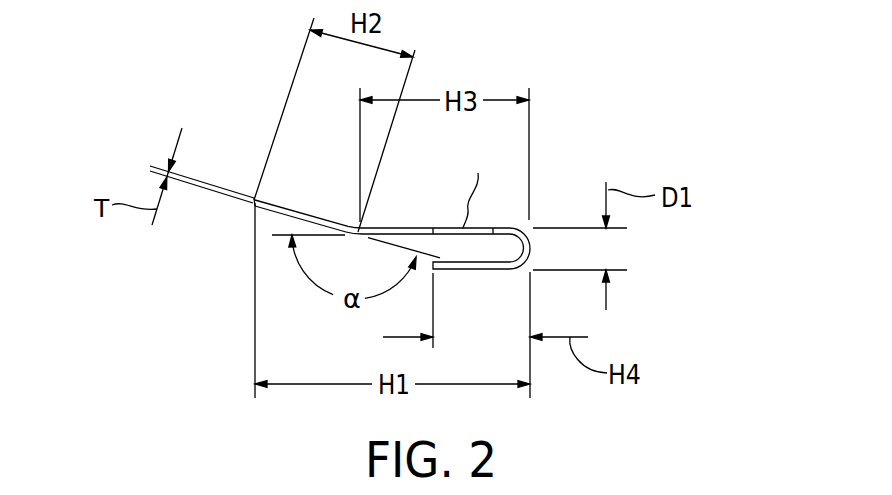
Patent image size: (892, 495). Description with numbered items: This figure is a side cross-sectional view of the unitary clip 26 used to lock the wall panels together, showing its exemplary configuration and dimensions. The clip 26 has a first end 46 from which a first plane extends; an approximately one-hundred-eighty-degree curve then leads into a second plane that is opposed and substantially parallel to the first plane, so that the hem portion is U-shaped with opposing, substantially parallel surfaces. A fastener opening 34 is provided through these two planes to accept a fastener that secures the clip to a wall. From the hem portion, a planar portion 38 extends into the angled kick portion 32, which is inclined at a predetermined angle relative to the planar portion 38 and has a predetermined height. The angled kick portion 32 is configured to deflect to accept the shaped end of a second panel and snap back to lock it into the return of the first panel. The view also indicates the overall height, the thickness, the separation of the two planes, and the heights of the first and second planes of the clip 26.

The unitary clip 26 is at (607, 128).
The first end 46 is at (254, 200).
The angled kick portion 32 is at (300, 212).
The planar portion 38 is at (408, 228).
The fastener opening 34 is at (483, 228).